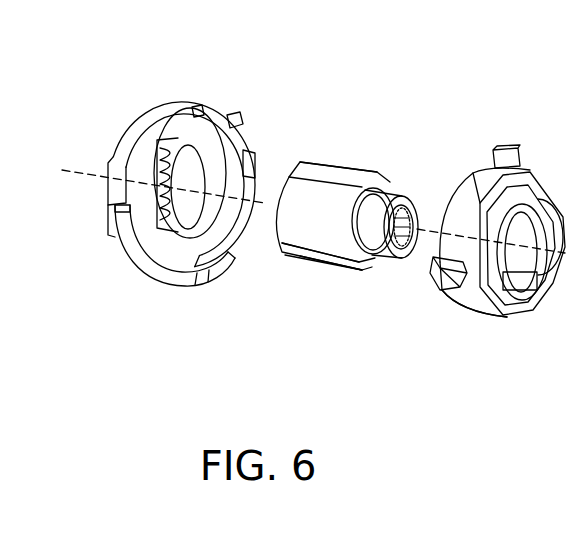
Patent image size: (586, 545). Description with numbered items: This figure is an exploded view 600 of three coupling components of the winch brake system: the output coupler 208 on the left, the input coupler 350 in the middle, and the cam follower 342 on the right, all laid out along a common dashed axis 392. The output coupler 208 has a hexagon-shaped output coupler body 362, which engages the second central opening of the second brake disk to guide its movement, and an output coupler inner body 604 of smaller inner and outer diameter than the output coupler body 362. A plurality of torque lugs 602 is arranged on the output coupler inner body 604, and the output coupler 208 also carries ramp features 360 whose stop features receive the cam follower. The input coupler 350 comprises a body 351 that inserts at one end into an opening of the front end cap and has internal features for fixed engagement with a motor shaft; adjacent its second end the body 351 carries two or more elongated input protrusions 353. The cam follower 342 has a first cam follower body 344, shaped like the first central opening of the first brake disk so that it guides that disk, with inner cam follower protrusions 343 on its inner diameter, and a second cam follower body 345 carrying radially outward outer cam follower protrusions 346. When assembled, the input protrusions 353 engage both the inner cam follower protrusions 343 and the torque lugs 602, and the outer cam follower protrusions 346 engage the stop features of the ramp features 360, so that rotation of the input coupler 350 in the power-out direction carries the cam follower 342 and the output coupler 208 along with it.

The output coupler 208 is at (147, 103).
The axis 392 is at (98, 163).
The torque lugs 602 is at (178, 232).
The ramp features 360 is at (255, 165).
The output coupler body 362 is at (112, 225).
The output coupler inner body 604 is at (165, 258).
The input coupler 350 is at (331, 155).
The body 351 is at (297, 233).
The input protrusions 353 is at (344, 175).
The exploded view 600 is at (493, 207).
The cam follower 342 is at (475, 160).
The inner cam follower protrusions 343 is at (507, 290).
The first cam follower body 344 is at (550, 283).
The second cam follower body 345 is at (475, 307).
The outer cam follower protrusions 346 is at (440, 283).